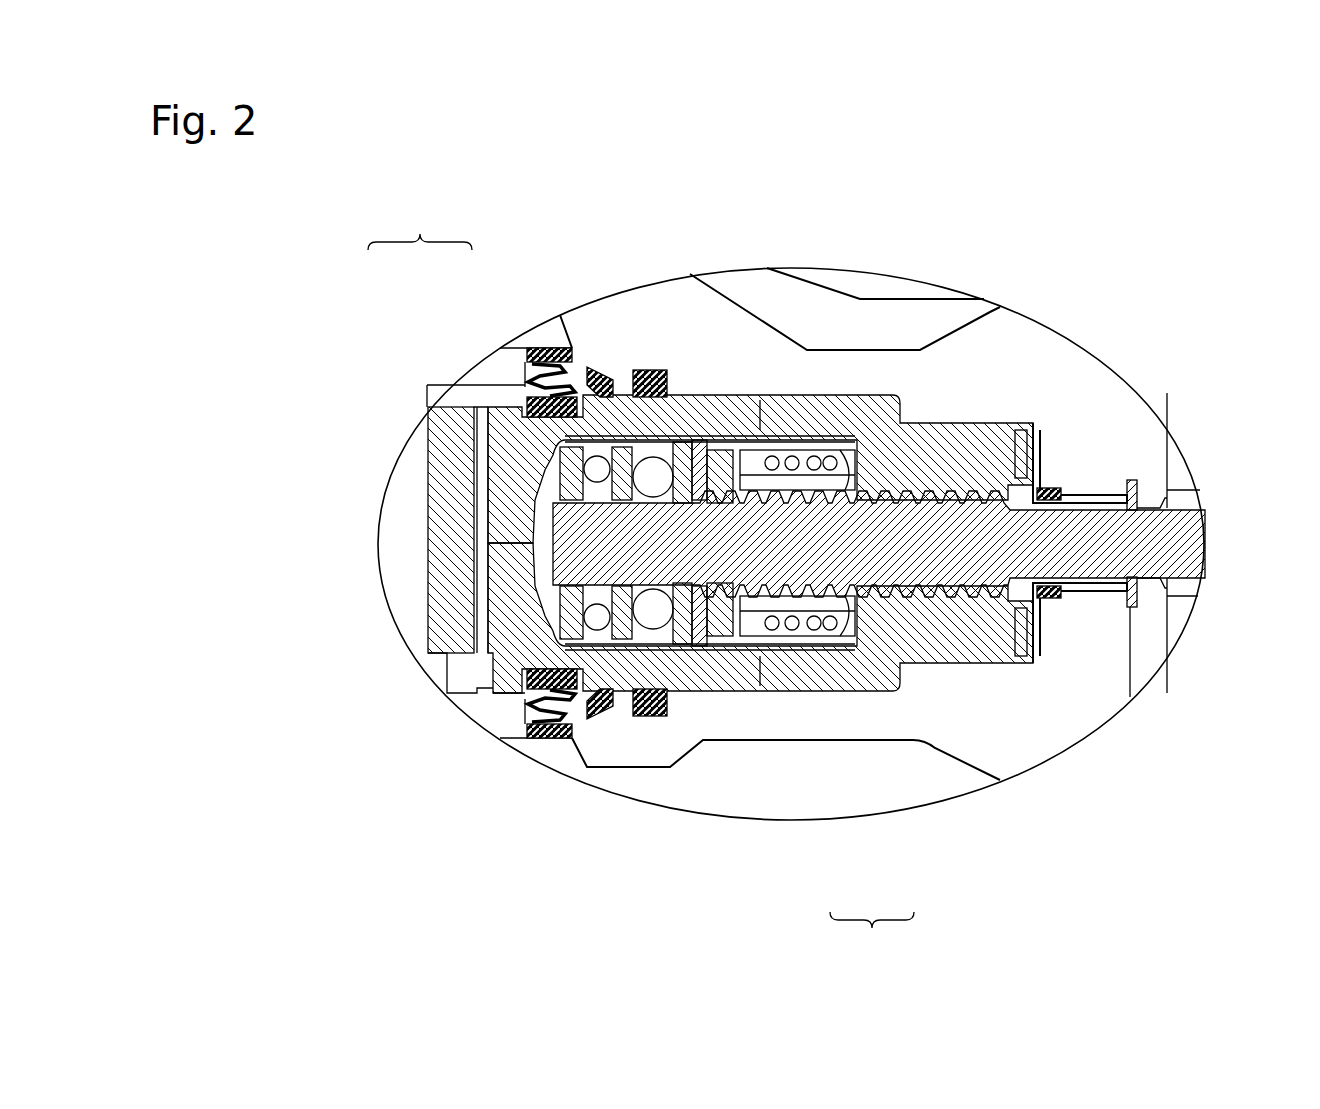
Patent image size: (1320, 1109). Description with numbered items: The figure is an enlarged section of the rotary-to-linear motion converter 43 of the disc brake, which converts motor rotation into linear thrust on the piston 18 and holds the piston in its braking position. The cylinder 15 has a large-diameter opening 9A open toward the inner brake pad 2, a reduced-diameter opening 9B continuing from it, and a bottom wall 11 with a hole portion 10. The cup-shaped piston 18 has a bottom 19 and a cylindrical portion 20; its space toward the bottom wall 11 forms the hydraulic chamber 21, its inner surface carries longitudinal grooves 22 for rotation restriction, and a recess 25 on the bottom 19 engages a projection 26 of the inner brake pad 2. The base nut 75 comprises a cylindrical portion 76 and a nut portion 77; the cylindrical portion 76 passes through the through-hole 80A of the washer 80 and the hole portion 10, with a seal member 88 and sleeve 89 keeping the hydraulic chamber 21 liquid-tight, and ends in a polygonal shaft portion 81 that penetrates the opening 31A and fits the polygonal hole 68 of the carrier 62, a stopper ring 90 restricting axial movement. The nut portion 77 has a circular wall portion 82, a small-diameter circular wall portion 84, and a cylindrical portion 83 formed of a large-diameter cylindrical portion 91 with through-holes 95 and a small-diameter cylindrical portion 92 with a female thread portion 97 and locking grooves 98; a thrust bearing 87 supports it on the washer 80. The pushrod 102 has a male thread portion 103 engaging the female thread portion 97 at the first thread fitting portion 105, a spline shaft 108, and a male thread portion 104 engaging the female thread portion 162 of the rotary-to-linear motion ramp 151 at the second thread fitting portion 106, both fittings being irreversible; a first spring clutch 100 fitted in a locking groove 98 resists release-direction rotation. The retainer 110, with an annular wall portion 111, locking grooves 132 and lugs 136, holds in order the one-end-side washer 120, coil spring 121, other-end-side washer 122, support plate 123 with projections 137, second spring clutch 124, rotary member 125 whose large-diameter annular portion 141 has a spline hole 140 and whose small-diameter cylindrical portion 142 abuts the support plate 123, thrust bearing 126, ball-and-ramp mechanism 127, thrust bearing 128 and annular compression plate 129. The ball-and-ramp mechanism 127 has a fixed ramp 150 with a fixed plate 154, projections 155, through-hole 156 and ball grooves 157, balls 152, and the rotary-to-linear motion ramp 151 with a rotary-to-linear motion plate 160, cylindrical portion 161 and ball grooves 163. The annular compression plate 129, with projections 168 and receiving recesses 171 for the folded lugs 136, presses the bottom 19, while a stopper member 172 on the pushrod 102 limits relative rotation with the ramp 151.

The inner brake pad 2 is at (455, 580).
The large-diameter opening 9A is at (597, 456).
The reduced-diameter opening 9B is at (1020, 448).
The hole portion 10 is at (1090, 450).
The bottom wall 11 is at (1090, 660).
The cylinder 15 is at (850, 440).
The piston 18 is at (830, 468).
The bottom 19 is at (480, 500).
The cylindrical portion 20 is at (890, 428).
The hydraulic chamber 21 is at (980, 640).
The longitudinal grooves for rotation restriction 22 is at (614, 440).
The recess 25 is at (450, 395).
The projection 26 is at (470, 715).
The opening 31A is at (1150, 660).
The rotary-to-linear motion converter 43 is at (705, 468).
The carrier 62 is at (1180, 588).
The polygonal hole 68 is at (1195, 470).
The base nut 75 is at (1046, 494).
The cylindrical portion 76 is at (1130, 498).
The nut portion 77 is at (1030, 468).
The washer 80 is at (1070, 620).
The through-hole 80A is at (1110, 650).
The polygonal shaft portion 81 is at (1190, 550).
The circular wall portion 82 is at (1000, 610).
The cylindrical portion 83 is at (1000, 473).
The small-diameter circular wall portion 84 is at (1020, 620).
The thrust bearing 87 is at (1040, 600).
The seal member 88 is at (1060, 498).
The sleeve 89 is at (1150, 480).
The stopper ring 90 is at (1175, 440).
The large-diameter cylindrical portion 91 is at (955, 438).
The small-diameter cylindrical portion 92 is at (870, 458).
The through-holes 95 is at (960, 670).
The female thread portion 97 is at (850, 640).
The locking grooves 98 is at (820, 620).
The first spring clutch 100 is at (773, 420).
The pushrod 102 is at (1150, 523).
The male thread portion 103 is at (880, 620).
The male thread portion 104 is at (530, 352).
The first thread fitting portion 105 is at (872, 784).
The second thread fitting portion 106 is at (420, 232).
The spline shaft 108 is at (560, 527).
The retainer 110 is at (920, 610).
The annular wall portion 111 is at (930, 468).
The one-end-side washer 120 is at (905, 468).
The coil spring 121 is at (800, 620).
The other-end-side washer 122 is at (810, 458).
The support plate 123 is at (823, 383).
The second spring clutch 124 is at (740, 452).
The rotary member 125 is at (730, 468).
The thrust bearing 126 is at (720, 630).
The ball-and-ramp mechanism 127 is at (640, 452).
The thrust bearing 128 is at (585, 690).
The annular compression plate 129 is at (545, 660).
The locking grooves 132 is at (562, 420).
The lugs 136 is at (505, 720).
The projections 137 is at (800, 440).
The spline hole 140 is at (760, 620).
The large-diameter annular portion 141 is at (745, 640).
The small-diameter cylindrical portion 142 is at (770, 630).
The fixed ramp 150 is at (683, 756).
The rotary-to-linear motion ramp 151 is at (592, 789).
The balls 152 is at (576, 378).
The fixed plate 154 is at (700, 625).
The projections 155 is at (660, 443).
The through-hole 156 is at (660, 640).
The ball grooves 157 is at (680, 452).
The rotary-to-linear motion plate 160 is at (600, 640).
The cylindrical portion 161 is at (520, 620).
The female thread portion 162 is at (540, 372).
The ball grooves 163 is at (620, 660).
The projections 168 is at (556, 405).
The receiving recesses 171 is at (560, 700).
The stopper member 172 is at (560, 595).